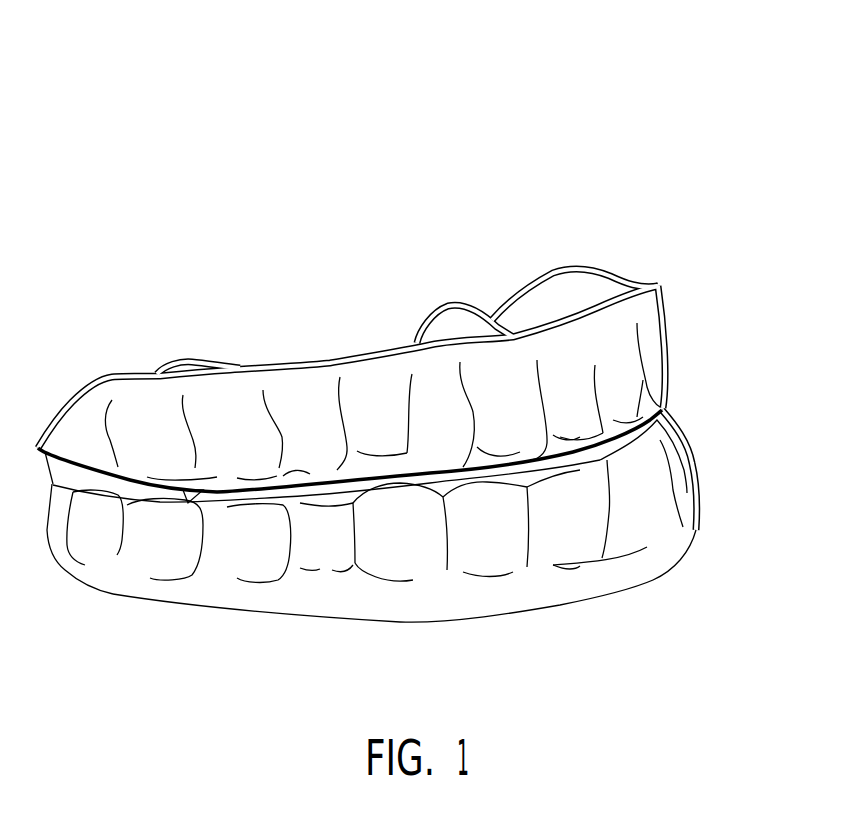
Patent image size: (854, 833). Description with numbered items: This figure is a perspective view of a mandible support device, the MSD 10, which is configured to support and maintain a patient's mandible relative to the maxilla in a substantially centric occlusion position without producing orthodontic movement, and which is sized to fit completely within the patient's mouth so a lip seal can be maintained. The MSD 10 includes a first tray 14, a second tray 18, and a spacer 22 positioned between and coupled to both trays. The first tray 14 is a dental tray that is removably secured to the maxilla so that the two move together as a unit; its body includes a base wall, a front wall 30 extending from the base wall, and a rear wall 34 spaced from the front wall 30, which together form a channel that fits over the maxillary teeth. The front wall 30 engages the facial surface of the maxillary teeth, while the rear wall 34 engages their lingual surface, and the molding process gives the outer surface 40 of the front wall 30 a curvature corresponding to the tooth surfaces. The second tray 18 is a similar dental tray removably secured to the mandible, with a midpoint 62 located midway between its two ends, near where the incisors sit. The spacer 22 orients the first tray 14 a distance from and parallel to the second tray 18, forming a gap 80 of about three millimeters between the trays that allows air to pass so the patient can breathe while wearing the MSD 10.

The MSD 10 is at (570, 95).
The first tray 14 is at (591, 288).
The second tray 18 is at (540, 568).
The spacer 22 is at (140, 495).
The front wall 30 is at (637, 336).
The rear wall 34 is at (396, 355).
The outer surface 40 is at (664, 352).
The midpoint 62 is at (680, 444).
The gap 80 is at (628, 463).